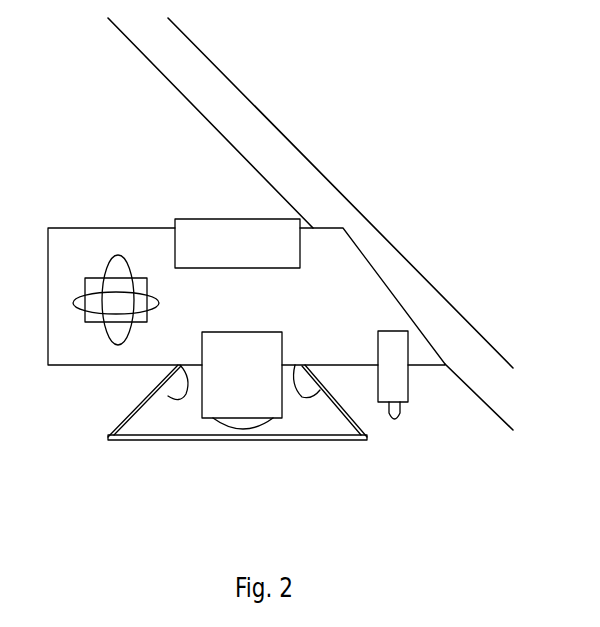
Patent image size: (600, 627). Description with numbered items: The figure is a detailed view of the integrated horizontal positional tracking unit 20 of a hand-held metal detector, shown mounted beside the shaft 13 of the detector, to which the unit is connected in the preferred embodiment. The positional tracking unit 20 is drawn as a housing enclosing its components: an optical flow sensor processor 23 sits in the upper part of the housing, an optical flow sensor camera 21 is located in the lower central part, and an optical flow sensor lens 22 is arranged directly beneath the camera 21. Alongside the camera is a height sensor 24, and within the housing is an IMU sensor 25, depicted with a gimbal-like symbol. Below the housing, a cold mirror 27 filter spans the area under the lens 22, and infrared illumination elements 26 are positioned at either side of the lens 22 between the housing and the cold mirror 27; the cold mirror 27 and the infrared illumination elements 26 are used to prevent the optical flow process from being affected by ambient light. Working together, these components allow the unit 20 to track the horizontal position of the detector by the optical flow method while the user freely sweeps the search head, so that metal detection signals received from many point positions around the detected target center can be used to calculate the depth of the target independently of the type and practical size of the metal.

The shaft 13 is at (260, 137).
The horizontal positional tracking unit 20 is at (118, 193).
The optical flow sensor camera 21 is at (240, 362).
The optical flow sensor lens 22 is at (243, 433).
The optical flow sensor processor 23 is at (247, 248).
The height sensor 24 is at (402, 420).
The IMU sensor 25 is at (93, 330).
The infrared illumination elements 26 is at (307, 405).
The cold mirror 27 is at (163, 445).